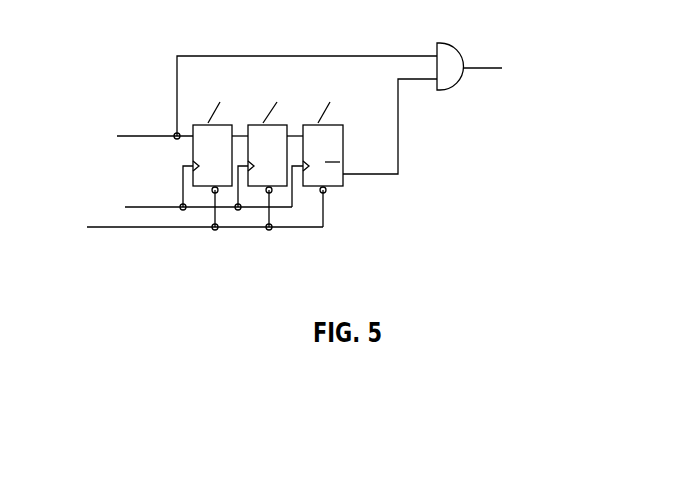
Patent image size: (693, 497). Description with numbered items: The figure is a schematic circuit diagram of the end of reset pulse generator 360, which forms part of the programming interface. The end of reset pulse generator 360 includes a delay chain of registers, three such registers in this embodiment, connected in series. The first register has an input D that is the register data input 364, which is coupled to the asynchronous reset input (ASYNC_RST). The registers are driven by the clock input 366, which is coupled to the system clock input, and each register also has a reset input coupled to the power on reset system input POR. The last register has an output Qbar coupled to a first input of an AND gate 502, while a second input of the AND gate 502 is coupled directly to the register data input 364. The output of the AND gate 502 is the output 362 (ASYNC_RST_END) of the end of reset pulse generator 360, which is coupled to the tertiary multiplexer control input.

The end of reset pulse generator 360 is at (543, 262).
The output 362 is at (480, 68).
The register data input 364 is at (157, 133).
The clock input 366 is at (164, 205).
The AND gate 502 is at (445, 92).